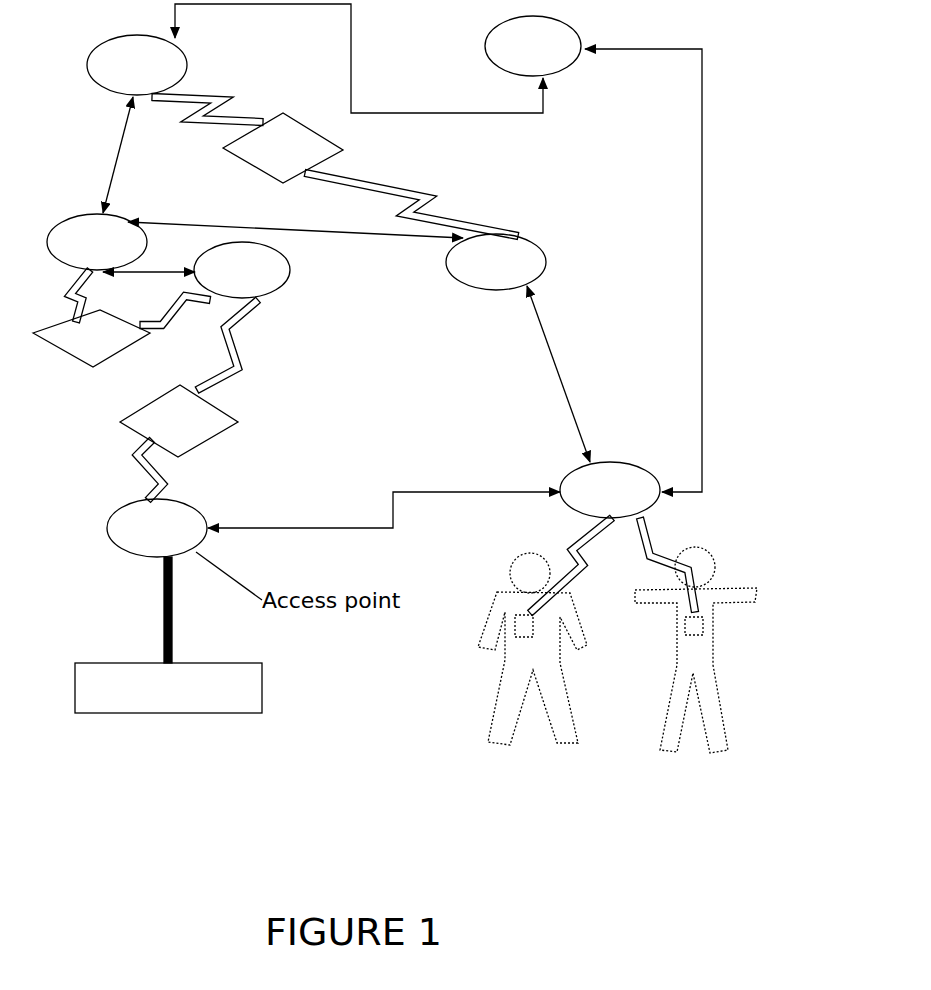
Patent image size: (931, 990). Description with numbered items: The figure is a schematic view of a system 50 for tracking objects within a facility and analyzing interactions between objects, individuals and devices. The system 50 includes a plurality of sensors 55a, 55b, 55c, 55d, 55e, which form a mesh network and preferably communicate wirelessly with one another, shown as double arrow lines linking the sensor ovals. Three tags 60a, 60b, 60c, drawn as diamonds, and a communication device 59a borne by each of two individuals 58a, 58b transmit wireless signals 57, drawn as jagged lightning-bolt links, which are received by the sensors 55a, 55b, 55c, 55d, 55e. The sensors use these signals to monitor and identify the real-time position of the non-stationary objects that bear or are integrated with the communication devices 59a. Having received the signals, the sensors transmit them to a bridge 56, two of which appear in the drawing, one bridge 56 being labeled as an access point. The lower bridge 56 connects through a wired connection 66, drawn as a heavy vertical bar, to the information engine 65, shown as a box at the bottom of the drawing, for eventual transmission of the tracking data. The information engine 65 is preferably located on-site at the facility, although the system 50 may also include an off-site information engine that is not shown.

The system 50 is at (735, 475).
The sensor 55a is at (137, 65).
The sensor 55b is at (533, 46).
The sensor 55c is at (242, 270).
The sensor 55d is at (496, 262).
The sensor 55e is at (610, 490).
The bridge 56 is at (127, 385).
The wireless signal 57 is at (291, 298).
The individual 58a is at (532, 664).
The individual 58b is at (696, 665).
The communication device 59a is at (515, 617).
The tag 60a is at (283, 148).
The tag 60b is at (179, 421).
The tag 60c is at (91, 338).
The information engine 65 is at (262, 692).
The wired connection 66 is at (162, 600).